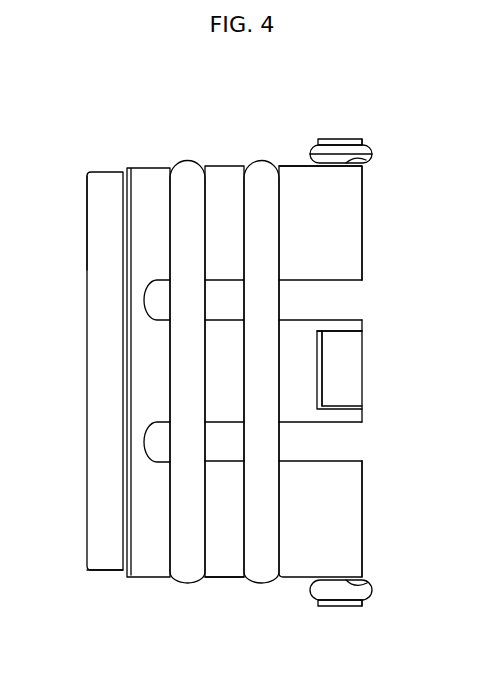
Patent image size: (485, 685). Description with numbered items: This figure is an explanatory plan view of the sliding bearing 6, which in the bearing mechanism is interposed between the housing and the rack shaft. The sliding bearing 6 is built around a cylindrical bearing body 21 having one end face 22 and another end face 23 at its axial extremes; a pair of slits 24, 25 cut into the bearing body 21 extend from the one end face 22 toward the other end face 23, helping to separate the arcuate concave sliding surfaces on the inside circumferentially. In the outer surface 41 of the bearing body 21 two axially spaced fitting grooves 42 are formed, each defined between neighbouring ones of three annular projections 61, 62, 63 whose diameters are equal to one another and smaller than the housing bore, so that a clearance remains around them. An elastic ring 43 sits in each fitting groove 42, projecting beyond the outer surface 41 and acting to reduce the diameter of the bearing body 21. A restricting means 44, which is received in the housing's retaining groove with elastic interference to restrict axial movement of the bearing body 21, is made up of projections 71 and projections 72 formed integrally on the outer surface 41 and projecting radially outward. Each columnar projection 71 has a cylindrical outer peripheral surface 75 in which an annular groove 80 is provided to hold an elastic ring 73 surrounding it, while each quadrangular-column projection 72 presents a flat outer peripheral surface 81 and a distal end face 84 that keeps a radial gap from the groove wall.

The sliding bearing 6 is at (97, 589).
The bearing body 21 is at (223, 556).
The one end face 22 is at (362, 487).
The another end face 23 is at (88, 357).
The slit 24 is at (360, 298).
The slit 25 is at (360, 441).
The outer surface 41 is at (355, 245).
The fitting groove 42 is at (171, 556).
The elastic ring 43 is at (182, 168).
The restricting means 44 is at (388, 127).
The annular projection 61 is at (294, 172).
The annular projection 62 is at (222, 175).
The annular projection 63 is at (140, 173).
The projection 71 is at (335, 140).
The projection 72 is at (355, 387).
The elastic ring 73 is at (367, 152).
The cylindrical outer peripheral surface 75 is at (366, 146).
The annular groove 80 is at (363, 160).
The flat outer peripheral surface 81 is at (362, 342).
The distal end face 84 is at (352, 365).